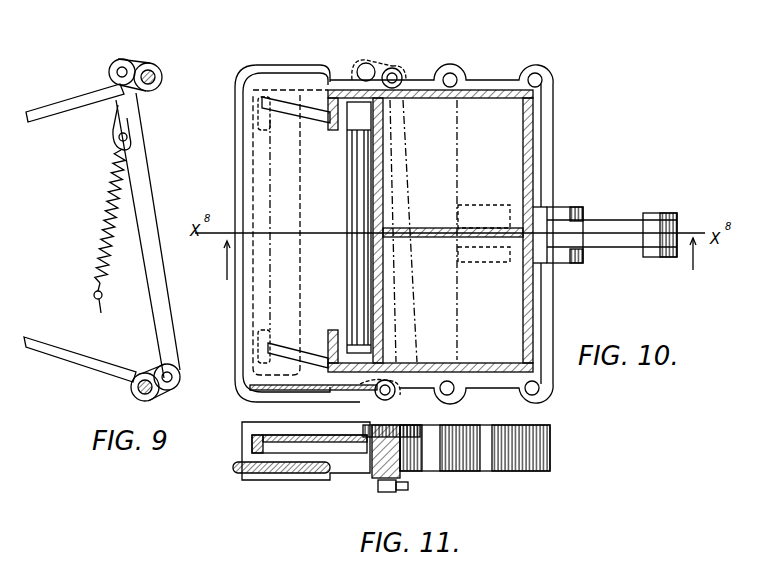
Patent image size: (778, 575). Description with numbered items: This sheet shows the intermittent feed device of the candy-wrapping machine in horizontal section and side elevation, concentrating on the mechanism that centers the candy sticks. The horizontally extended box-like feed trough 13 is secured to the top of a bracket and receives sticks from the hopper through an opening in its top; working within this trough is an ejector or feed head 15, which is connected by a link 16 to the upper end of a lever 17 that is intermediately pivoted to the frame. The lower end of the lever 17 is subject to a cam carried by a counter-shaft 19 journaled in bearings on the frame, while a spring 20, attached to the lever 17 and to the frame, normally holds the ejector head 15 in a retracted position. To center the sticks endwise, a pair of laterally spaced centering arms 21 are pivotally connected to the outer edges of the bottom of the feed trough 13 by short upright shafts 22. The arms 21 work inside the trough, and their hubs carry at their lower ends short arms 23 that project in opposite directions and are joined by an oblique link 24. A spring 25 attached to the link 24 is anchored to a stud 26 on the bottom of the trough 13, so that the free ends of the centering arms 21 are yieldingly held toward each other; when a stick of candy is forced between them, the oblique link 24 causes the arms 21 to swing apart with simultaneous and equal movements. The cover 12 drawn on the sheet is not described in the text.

In FIG. 10, the cover 12 is at (283, 297).
In FIG. 11, the cover 12 is at (267, 487).
In FIG. 10, the feed trough 13 is at (463, 84).
In FIG. 11, the feed trough 13 is at (527, 457).
In FIG. 10, the ejector or feed head 15 is at (533, 165).
In FIG. 10, the link 16 is at (600, 228).
In FIG. 10, the lever 17 is at (656, 214).
In FIG. 10, the counter-shaft 19 is at (357, 200).
In FIG. 9, the spring 20 is at (147, 180).
In FIG. 9, the centering arms 21 is at (45, 113).
In FIG. 10, the centering arms 21 is at (318, 117).
In FIG. 11, the centering arms 21 is at (310, 443).
In FIG. 9, the upright shafts 22 is at (151, 70).
In FIG. 10, the upright shafts 22 is at (398, 74).
In FIG. 11, the upright shafts 22 is at (378, 482).
In FIG. 9, the short arms 23 is at (133, 61).
In FIG. 10, the short arms 23 is at (372, 66).
In FIG. 11, the short arms 23 is at (388, 493).
In FIG. 9, the link 24 is at (50, 345).
In FIG. 10, the link 24 is at (300, 345).
In FIG. 11, the link 24 is at (412, 486).
In FIG. 9, the spring 25 is at (100, 228).
In FIG. 9, the stud 26 is at (96, 308).